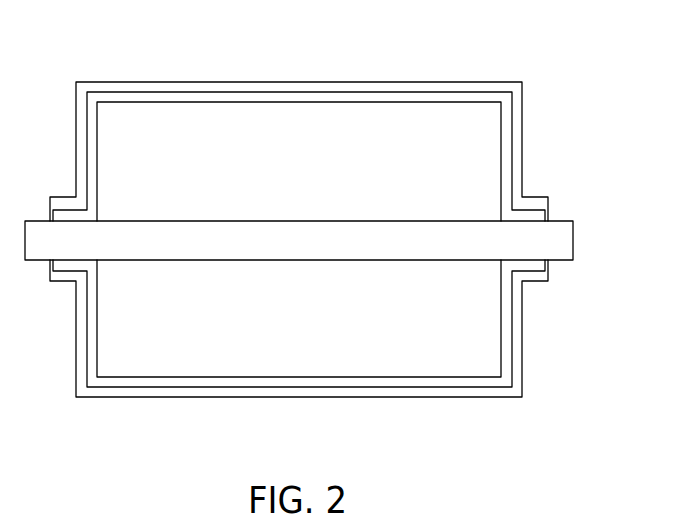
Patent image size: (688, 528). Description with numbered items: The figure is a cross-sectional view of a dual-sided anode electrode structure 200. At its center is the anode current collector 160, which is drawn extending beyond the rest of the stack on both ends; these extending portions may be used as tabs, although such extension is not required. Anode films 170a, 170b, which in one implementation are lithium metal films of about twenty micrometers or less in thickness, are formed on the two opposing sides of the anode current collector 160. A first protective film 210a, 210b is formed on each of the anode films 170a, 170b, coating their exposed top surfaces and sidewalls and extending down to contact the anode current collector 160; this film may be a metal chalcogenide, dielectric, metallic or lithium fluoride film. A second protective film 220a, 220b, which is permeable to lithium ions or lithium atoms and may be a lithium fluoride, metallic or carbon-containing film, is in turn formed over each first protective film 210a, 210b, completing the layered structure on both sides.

The anode electrode structure 200 is at (553, 39).
The anode current collector 160 is at (327, 249).
The anode film 170a is at (332, 166).
The anode film 170b is at (332, 323).
The first protective film 210a is at (188, 82).
The first protective film 210b is at (185, 387).
The second protective film 220a is at (390, 82).
The second protective film 220b is at (375, 397).